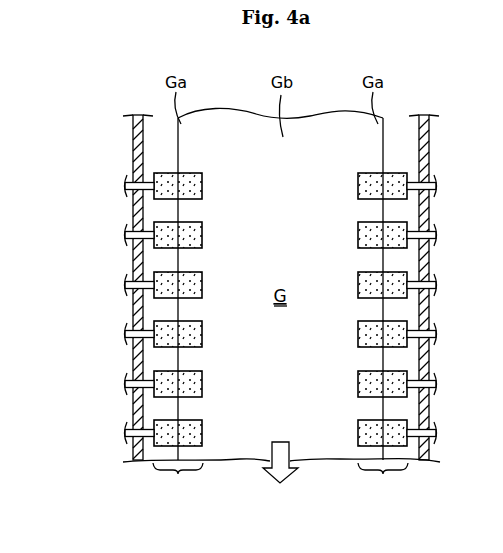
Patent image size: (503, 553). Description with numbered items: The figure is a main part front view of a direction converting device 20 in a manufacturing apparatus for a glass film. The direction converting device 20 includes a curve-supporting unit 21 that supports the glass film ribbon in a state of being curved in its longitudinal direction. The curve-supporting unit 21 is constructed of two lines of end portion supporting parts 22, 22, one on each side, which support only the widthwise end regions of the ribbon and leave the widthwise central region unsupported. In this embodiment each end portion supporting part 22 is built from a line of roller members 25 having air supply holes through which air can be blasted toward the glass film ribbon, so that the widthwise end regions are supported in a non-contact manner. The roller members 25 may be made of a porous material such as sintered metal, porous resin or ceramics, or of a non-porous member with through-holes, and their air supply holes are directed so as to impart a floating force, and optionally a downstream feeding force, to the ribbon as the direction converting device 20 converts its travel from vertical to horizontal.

The direction converting device 20 is at (96, 157).
The curve-supporting unit 21 is at (152, 399).
The end portion supporting part 22 is at (280, 482).
The roller member 25 is at (165, 193).